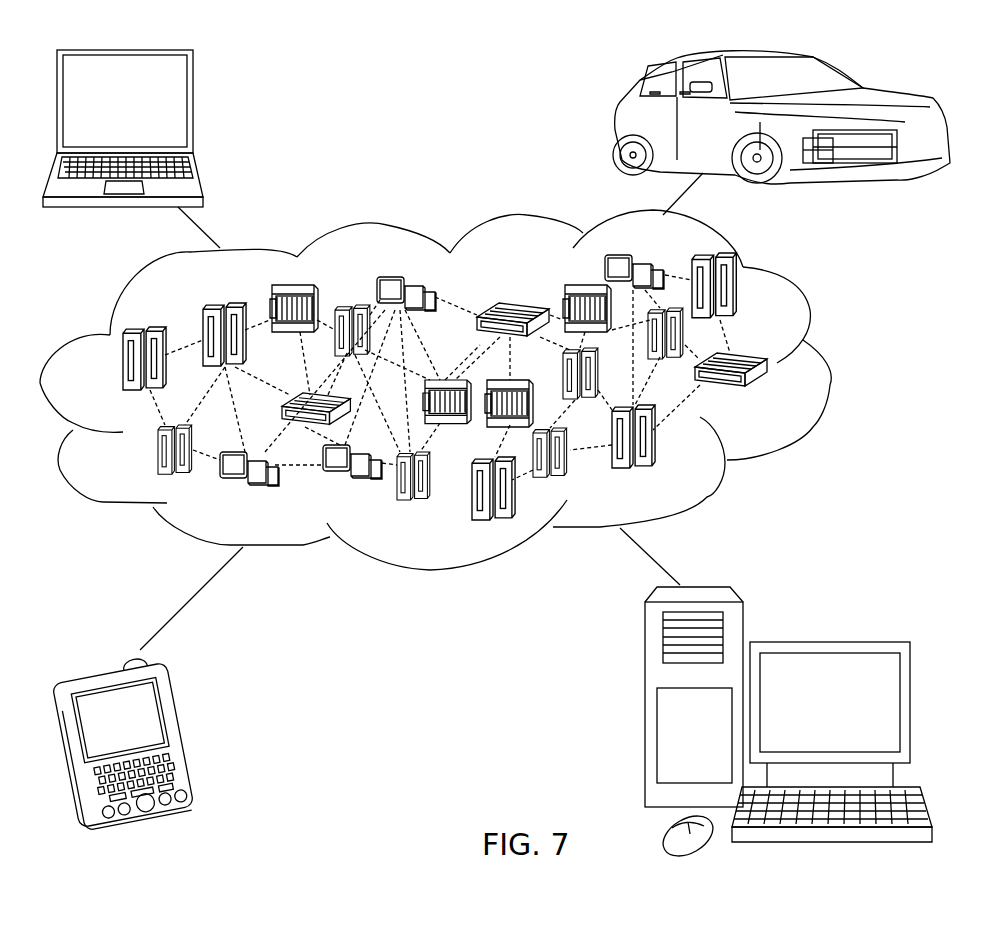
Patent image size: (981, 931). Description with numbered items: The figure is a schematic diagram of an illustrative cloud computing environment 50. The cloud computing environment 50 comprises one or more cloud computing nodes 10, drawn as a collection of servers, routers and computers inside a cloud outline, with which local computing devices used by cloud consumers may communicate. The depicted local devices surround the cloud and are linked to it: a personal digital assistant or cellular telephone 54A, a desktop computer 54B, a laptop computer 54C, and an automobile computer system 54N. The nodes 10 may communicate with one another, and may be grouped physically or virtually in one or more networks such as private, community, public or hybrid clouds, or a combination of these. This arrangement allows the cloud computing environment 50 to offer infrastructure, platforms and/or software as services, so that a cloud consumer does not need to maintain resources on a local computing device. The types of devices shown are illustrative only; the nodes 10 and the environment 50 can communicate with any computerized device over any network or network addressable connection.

The cloud computing nodes 10 is at (780, 402).
The cloud computing environment 50 is at (830, 368).
The personal digital assistant or cellular telephone 54A is at (180, 735).
The desktop computer 54B is at (828, 642).
The laptop computer 54C is at (193, 108).
The automobile computer system 54N is at (613, 125).